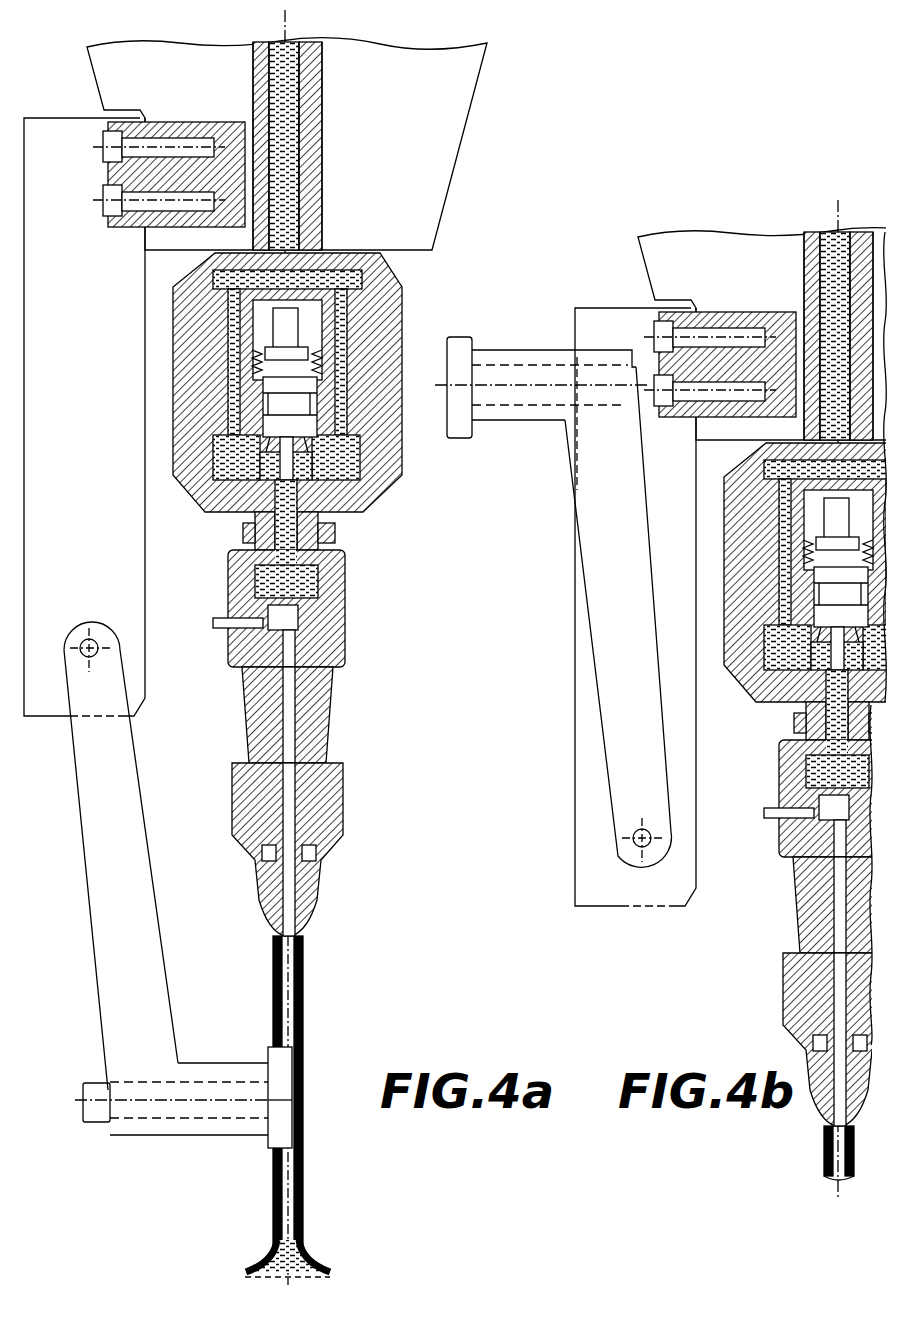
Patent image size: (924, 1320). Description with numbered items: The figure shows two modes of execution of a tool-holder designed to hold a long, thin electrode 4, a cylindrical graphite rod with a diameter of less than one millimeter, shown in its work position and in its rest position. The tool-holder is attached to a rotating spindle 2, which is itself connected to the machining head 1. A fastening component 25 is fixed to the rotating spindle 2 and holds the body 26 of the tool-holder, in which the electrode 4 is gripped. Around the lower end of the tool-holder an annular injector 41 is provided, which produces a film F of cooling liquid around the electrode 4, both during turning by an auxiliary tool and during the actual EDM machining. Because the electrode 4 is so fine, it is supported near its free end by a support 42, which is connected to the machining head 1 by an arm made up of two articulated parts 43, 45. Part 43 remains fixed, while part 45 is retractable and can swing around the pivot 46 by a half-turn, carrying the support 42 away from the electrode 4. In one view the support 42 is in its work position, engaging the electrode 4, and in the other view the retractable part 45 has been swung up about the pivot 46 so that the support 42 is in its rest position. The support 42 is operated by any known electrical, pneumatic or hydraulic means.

In FIG. 4A, the machining head 1 is at (437, 118).
In FIG. 4A, the rotating spindle 2 is at (372, 325).
In FIG. 4A, the electrode 4 is at (292, 975).
In FIG. 4A, the fastening component 25 is at (345, 600).
In FIG. 4A, the body 26 is at (320, 707).
In FIG. 4A, the annular injector 41 is at (330, 858).
In FIG. 4A, the support 42 is at (278, 1138).
In FIG. 4B, the support 42 is at (465, 428).
In FIG. 4A, the fixed part 43 is at (106, 451).
In FIG. 4A, the retractable part 45 is at (125, 903).
In FIG. 4B, the retractable part 45 is at (540, 372).
In FIG. 4A, the pivot 46 is at (90, 636).
In FIG. 4B, the pivot 46 is at (641, 848).
In FIG. 4A, the film of cooling liquid F is at (310, 1264).